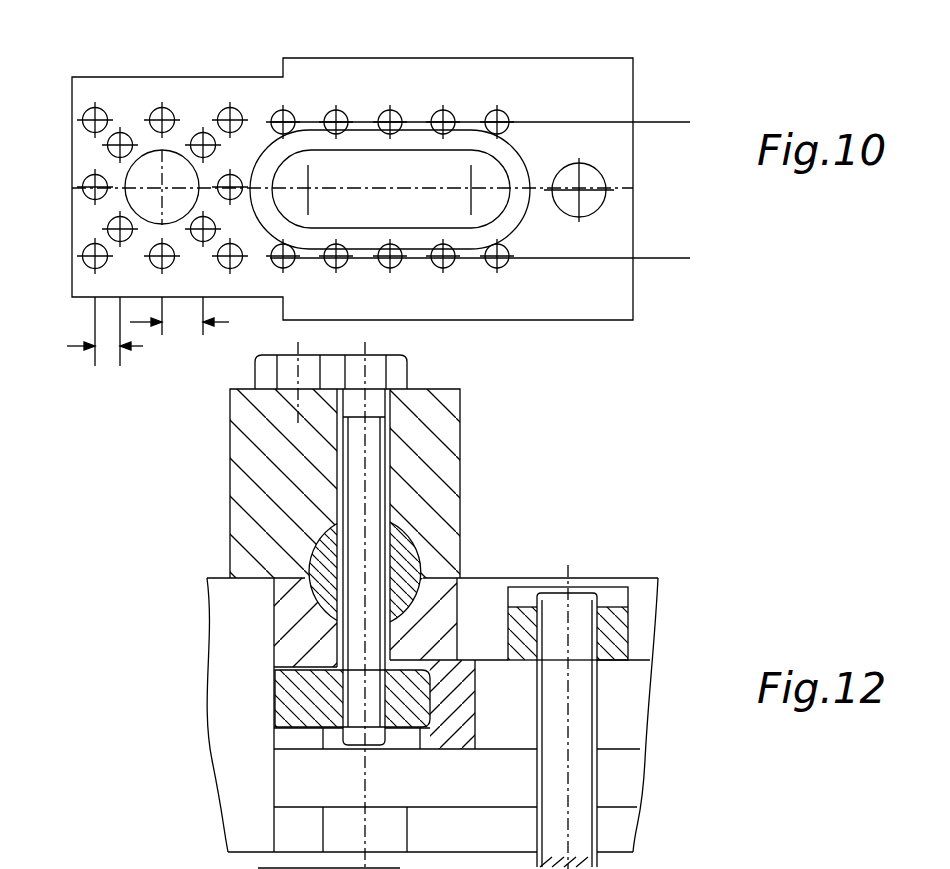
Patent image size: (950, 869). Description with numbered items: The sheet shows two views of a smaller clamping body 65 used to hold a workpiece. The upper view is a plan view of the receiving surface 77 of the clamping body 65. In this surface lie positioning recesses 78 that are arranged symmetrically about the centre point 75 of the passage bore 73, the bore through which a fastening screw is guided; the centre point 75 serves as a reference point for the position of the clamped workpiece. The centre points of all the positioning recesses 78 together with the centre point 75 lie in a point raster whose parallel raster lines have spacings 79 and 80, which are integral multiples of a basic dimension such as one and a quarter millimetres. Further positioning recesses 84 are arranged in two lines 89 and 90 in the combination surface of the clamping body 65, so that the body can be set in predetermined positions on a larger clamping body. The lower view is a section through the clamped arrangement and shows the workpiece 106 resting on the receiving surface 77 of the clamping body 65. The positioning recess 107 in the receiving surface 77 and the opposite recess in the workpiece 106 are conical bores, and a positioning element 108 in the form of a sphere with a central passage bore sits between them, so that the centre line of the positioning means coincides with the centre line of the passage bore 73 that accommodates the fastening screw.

In FIG. 10, the passage bore 73 is at (172, 172).
In FIG. 12, the passage bore 73 is at (556, 590).
In FIG. 10, the centre point 75 is at (160, 187).
In FIG. 10, the positioning recesses 78 is at (232, 182).
In FIG. 10, the positioning recesses 84 is at (447, 120).
In FIG. 10, the line 89 is at (657, 123).
In FIG. 10, the line 90 is at (660, 258).
In FIG. 10, the spacing 79 is at (105, 349).
In FIG. 10, the spacing 80 is at (180, 322).
In FIG. 12, the workpiece 106 is at (423, 432).
In FIG. 12, the positioning recess 107 is at (393, 647).
In FIG. 12, the positioning element 108 is at (402, 568).
In FIG. 12, the receiving surface 77 is at (637, 578).
In FIG. 12, the clamping body 65 is at (462, 707).